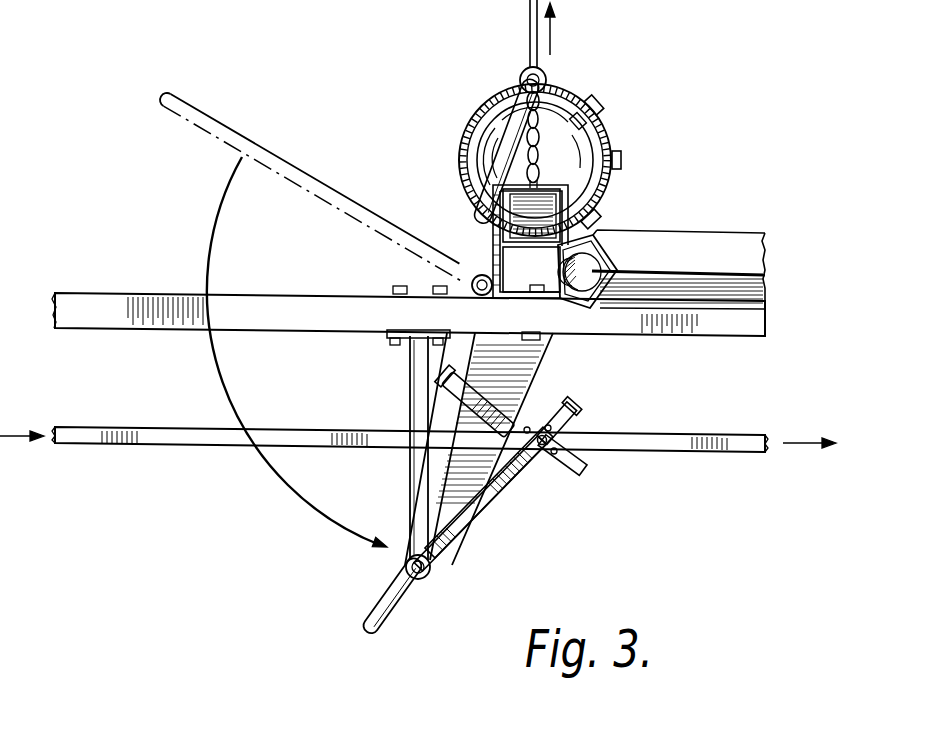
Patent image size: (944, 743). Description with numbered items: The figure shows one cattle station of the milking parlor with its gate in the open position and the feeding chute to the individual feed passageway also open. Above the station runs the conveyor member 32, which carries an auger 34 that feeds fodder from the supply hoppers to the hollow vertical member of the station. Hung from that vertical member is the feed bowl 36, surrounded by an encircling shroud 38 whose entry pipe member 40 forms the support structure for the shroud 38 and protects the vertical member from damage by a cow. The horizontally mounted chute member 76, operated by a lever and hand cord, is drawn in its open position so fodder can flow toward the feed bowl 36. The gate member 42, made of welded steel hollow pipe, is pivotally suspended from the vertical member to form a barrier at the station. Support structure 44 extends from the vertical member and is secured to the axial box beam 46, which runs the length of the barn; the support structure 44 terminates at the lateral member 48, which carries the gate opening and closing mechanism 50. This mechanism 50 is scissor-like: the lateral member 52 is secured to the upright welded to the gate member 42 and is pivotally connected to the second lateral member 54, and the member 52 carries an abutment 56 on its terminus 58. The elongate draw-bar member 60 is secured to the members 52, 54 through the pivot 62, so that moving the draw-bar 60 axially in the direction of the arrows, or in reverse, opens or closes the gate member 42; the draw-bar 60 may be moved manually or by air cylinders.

The conveyor member 32 is at (712, 240).
The auger 34 is at (578, 300).
The feed bowl 36 is at (497, 133).
The shroud 38 is at (600, 135).
The entry pipe member 40 is at (473, 218).
The gate member 42 is at (278, 160).
The support structure 44 is at (418, 415).
The axial box beam 46 is at (92, 320).
The lateral member 48 is at (526, 363).
The gate opening and closing mechanism 50 is at (517, 484).
The lateral member 52 is at (463, 520).
The second lateral member 54 is at (440, 378).
The abutment 56 is at (585, 420).
The terminus 58 is at (578, 403).
The draw-bar member 60 is at (160, 433).
The pivot 62 is at (542, 447).
The chute member 76 is at (540, 213).